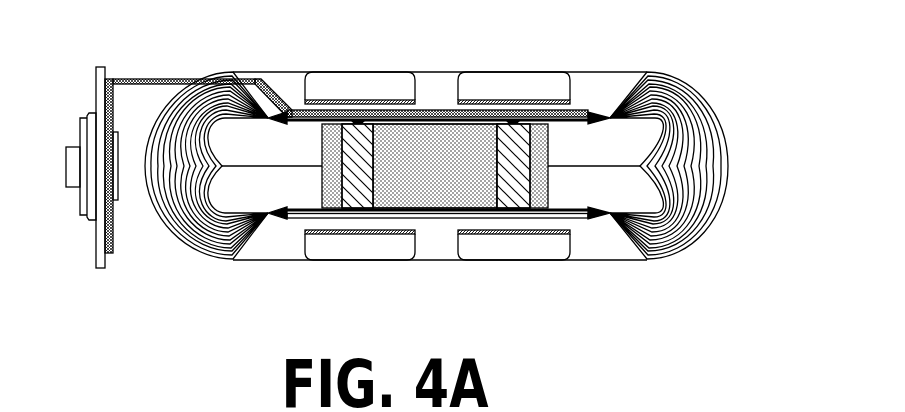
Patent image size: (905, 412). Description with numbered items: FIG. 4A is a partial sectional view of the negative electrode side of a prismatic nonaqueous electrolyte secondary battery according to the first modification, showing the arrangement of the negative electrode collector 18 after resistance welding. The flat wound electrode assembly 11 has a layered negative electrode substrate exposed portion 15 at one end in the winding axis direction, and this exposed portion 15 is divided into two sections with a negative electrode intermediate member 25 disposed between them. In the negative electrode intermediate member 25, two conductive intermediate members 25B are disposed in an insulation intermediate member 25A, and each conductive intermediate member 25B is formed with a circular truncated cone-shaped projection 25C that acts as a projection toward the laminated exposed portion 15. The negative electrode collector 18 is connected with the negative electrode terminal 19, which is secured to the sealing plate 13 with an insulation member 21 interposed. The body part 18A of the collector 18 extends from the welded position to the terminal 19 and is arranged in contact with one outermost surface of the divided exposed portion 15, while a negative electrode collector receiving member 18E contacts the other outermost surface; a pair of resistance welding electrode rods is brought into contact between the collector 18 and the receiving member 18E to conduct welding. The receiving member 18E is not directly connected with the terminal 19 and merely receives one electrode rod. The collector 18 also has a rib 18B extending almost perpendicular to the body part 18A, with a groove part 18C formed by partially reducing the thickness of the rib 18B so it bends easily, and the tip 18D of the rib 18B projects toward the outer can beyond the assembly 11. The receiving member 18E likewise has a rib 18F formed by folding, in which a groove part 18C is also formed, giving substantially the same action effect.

The flat wound electrode assembly 11 is at (607, 261).
The sealing plate 13 is at (100, 258).
The negative electrode substrate exposed portion 15 is at (707, 172).
The negative electrode collector 18 is at (150, 78).
The body part 18A is at (437, 110).
The rib 18B is at (557, 79).
The groove part 18C is at (499, 100).
The tip of the rib 18D is at (331, 72).
The negative electrode collector receiving member 18E is at (435, 220).
The rib 18F is at (350, 247).
The negative electrode terminal 19 is at (72, 183).
The insulation member 21 is at (83, 120).
The negative electrode intermediate member 25 is at (401, 218).
The insulation intermediate member 25A is at (410, 196).
The conductive intermediate member 25B is at (512, 196).
The circular truncated cone-shaped projection 25C is at (352, 208).